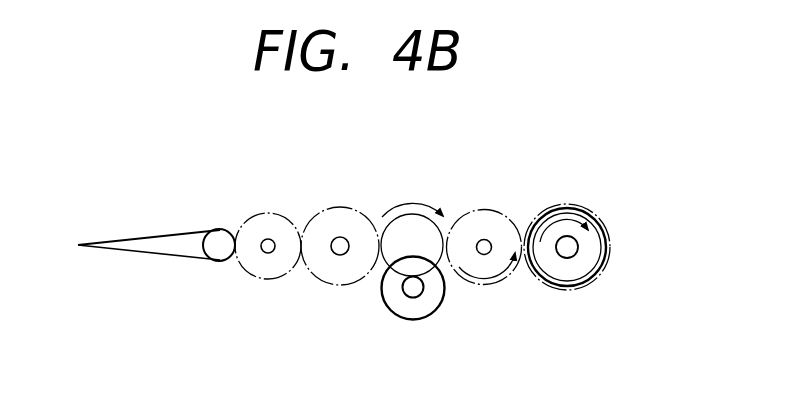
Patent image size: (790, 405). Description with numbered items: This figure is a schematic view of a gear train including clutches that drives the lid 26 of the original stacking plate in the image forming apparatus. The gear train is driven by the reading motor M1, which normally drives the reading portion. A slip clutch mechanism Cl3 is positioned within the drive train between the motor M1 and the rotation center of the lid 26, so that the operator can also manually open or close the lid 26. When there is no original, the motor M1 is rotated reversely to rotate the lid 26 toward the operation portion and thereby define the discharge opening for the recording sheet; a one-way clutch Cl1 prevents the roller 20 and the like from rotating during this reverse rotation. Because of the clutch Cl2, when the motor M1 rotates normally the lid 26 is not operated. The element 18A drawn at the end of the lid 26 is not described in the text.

The drive roller 18A is at (220, 231).
The lid 26 is at (157, 248).
The slip clutch mechanism Cl3 is at (257, 263).
The clutch Cl2 is at (357, 220).
The one-way clutch Cl1 is at (498, 220).
The reading motor M1 is at (418, 312).
The roller 20 is at (565, 258).